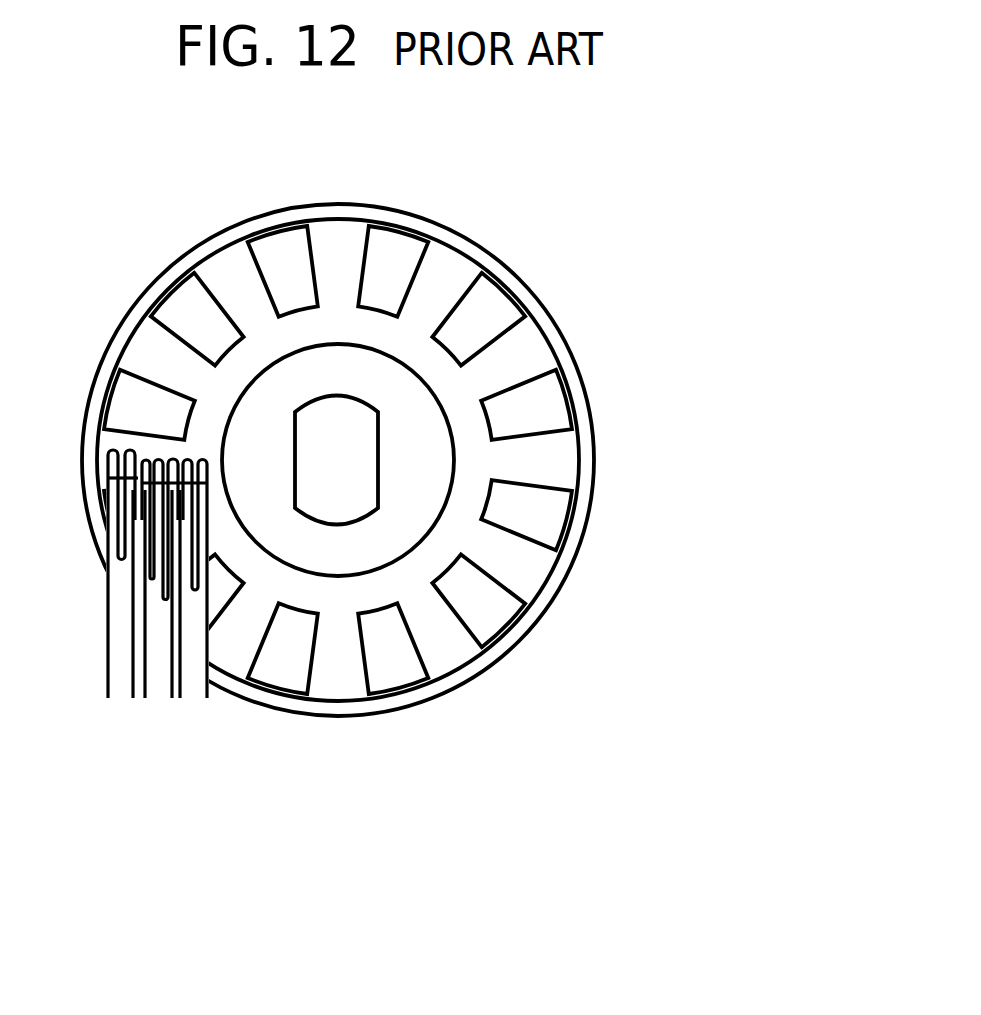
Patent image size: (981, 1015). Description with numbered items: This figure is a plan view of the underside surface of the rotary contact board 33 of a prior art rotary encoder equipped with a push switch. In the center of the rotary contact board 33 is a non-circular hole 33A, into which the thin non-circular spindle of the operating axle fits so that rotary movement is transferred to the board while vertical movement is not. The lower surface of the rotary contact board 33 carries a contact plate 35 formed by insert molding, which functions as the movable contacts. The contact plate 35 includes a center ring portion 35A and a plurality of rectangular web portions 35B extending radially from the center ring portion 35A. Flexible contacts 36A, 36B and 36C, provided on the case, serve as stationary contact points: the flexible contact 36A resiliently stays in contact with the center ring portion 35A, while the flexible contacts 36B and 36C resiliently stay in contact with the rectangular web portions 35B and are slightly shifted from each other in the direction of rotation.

The rotary contact board 33 is at (534, 625).
The non-circular hole 33A is at (358, 475).
The contact plate 35 is at (748, 258).
The center ring portion 35A is at (432, 352).
The rectangular web portions 35B is at (545, 458).
The flexible contact 36A is at (193, 700).
The flexible contact 36B is at (157, 693).
The flexible contact 36C is at (120, 690).